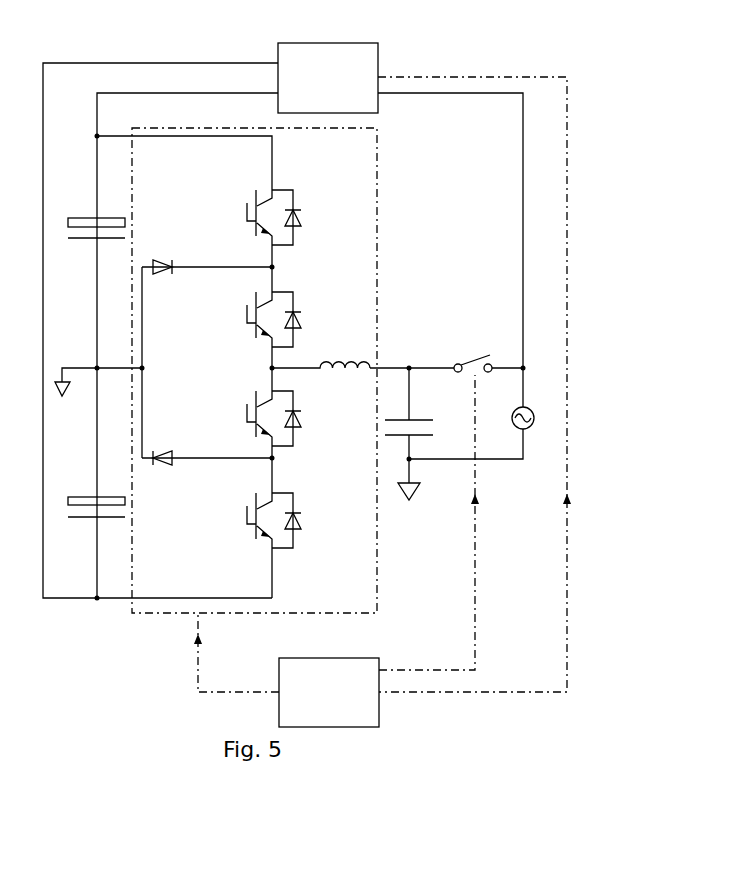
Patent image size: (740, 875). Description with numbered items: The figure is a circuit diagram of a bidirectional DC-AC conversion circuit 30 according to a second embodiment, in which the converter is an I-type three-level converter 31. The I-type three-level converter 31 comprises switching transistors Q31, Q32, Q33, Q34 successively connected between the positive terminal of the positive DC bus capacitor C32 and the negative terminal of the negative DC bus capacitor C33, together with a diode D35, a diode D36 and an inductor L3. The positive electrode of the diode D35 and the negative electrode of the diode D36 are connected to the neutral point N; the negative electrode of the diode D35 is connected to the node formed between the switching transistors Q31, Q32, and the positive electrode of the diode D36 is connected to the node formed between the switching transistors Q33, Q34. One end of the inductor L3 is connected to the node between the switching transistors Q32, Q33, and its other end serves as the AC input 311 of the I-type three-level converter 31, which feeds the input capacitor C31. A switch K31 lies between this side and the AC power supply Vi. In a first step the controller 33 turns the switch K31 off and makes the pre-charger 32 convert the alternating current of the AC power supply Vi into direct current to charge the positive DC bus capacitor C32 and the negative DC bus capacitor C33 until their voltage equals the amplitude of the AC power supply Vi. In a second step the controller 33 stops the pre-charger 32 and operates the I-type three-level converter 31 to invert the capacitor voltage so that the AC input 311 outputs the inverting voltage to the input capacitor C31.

The bidirectional DC-AC conversion circuit 30 is at (447, 47).
The I-type three-level converter 31 is at (377, 237).
The AC input 311 is at (383, 365).
The pre-charger 32 is at (329, 42).
The controller 33 is at (328, 658).
The input capacitor C31 is at (417, 434).
The positive DC bus capacitor C32 is at (87, 208).
The negative DC bus capacitor C33 is at (78, 521).
The neutral point N is at (100, 383).
The diode D35 is at (207, 280).
The diode D36 is at (207, 471).
The switching transistor Q31 is at (255, 217).
The switching transistor Q32 is at (255, 319).
The switching transistor Q33 is at (255, 418).
The switching transistor Q34 is at (255, 520).
The inductor L3 is at (321, 350).
The switch K31 is at (488, 356).
The AC power supply Vi is at (533, 418).